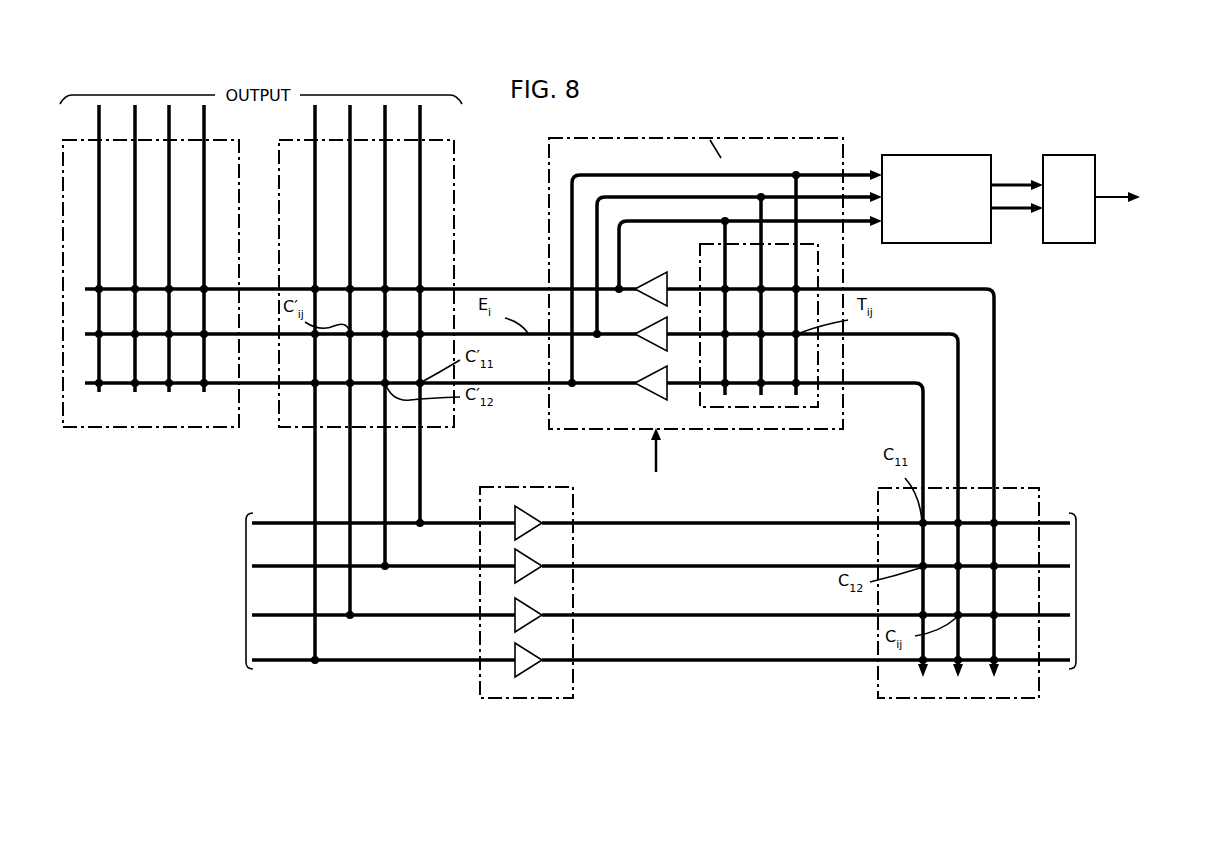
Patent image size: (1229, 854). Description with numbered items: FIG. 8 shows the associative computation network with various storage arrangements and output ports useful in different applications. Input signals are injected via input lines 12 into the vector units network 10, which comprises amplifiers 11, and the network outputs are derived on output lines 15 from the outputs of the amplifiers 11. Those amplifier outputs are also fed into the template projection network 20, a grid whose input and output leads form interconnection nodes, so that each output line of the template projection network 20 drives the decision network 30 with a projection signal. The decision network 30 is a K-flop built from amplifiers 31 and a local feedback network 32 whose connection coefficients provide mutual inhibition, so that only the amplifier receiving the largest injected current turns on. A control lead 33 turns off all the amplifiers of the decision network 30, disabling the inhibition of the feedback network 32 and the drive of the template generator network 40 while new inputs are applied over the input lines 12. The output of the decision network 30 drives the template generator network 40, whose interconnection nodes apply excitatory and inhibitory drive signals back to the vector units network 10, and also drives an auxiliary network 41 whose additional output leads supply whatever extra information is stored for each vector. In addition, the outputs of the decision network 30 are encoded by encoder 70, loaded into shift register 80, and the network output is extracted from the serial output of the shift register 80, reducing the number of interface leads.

The vector units network 10 is at (526, 566).
The amplifier 11 is at (529, 517).
The input lines 12 is at (272, 518).
The output lines 15 is at (1048, 514).
The template projection network 20 is at (947, 680).
The decision network 30 is at (691, 317).
The amplifier 31 is at (651, 279).
The local feedback network 32 is at (778, 400).
The control lead 33 is at (660, 450).
The template generator network 40 is at (466, 238).
The auxiliary network 41 is at (120, 418).
The encoder 70 is at (924, 165).
The shift register 80 is at (1062, 165).